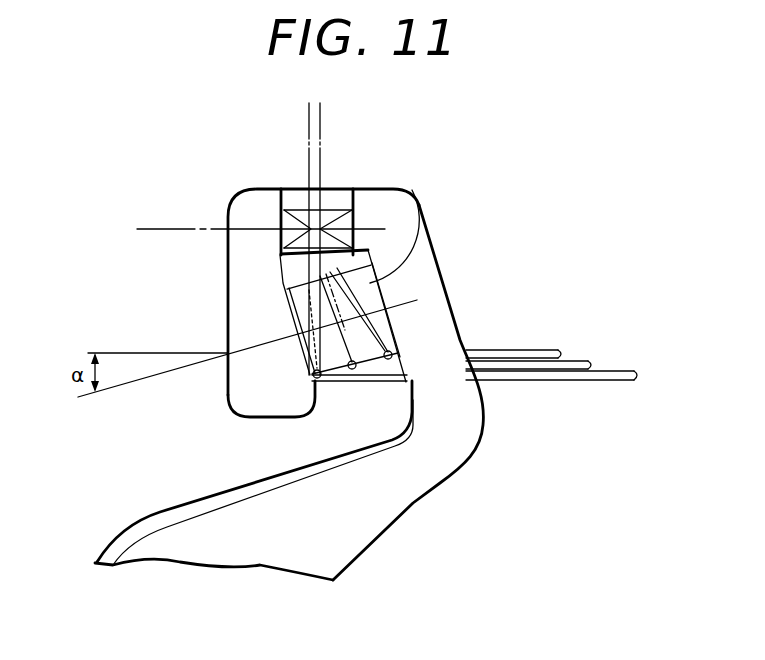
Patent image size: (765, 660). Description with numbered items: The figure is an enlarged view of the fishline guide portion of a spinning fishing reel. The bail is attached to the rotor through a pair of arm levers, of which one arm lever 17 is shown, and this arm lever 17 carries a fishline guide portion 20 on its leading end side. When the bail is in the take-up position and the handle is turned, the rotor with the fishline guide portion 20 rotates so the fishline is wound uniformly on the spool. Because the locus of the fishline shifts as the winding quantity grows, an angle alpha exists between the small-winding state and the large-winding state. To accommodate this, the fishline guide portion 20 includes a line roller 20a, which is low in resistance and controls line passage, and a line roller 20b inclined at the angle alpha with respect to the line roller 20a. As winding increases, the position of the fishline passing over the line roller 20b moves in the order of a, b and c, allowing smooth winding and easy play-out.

The arm lever 17 is at (403, 505).
The fishline guide portion 20 is at (214, 283).
The line roller 20a is at (348, 207).
The line roller 20b is at (410, 236).
The fishline locus state a is at (552, 380).
The fishline locus state b is at (581, 361).
The fishline locus state c is at (488, 350).